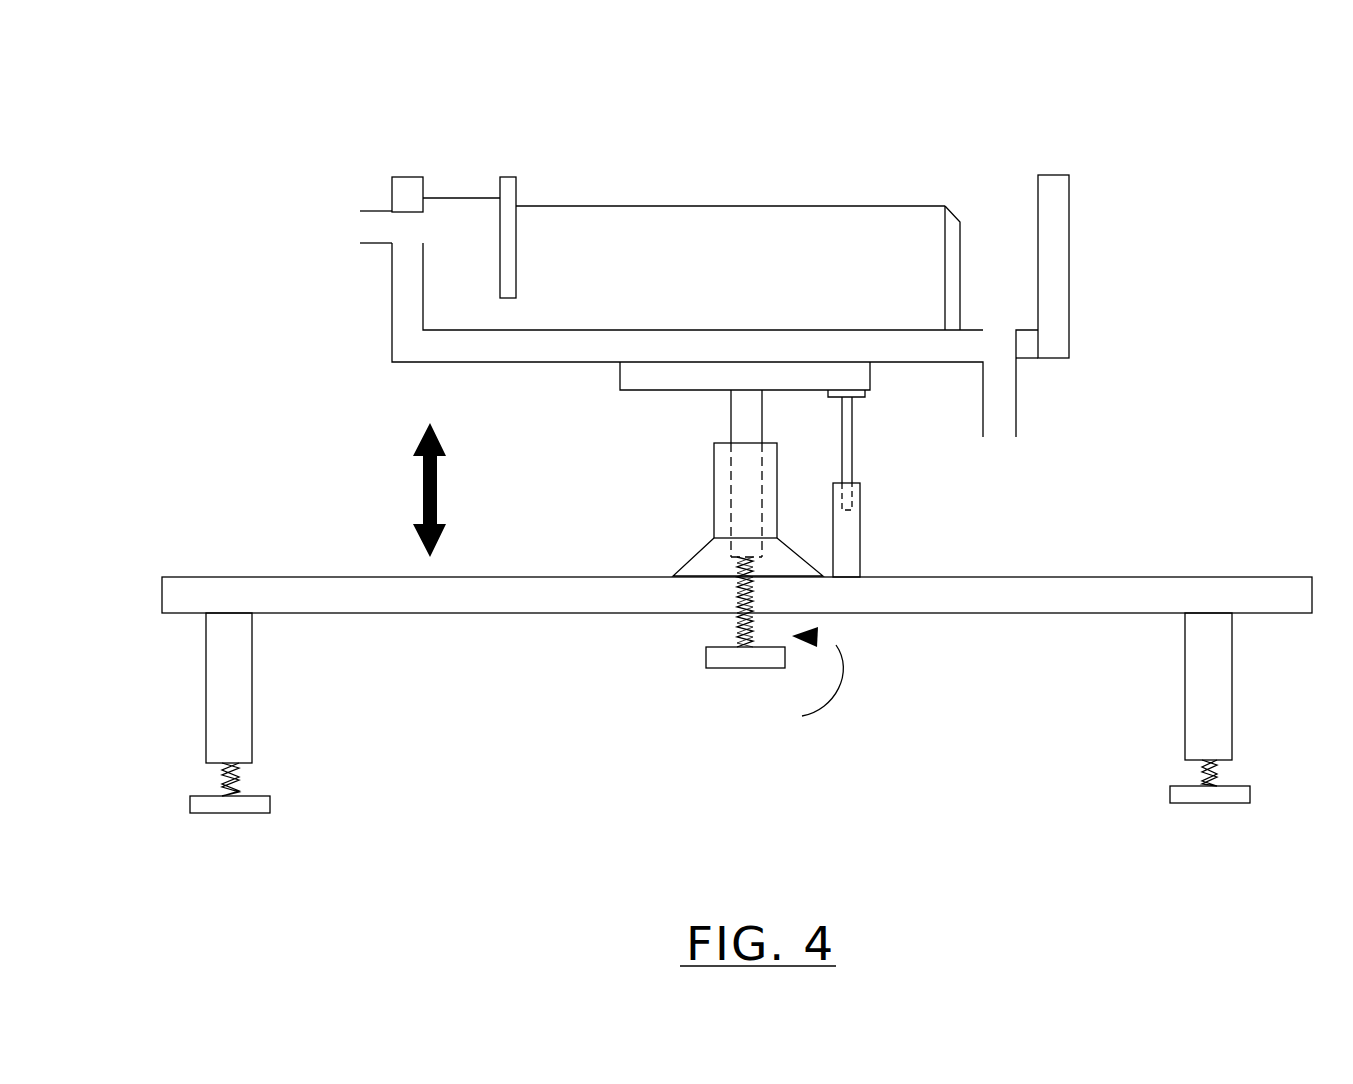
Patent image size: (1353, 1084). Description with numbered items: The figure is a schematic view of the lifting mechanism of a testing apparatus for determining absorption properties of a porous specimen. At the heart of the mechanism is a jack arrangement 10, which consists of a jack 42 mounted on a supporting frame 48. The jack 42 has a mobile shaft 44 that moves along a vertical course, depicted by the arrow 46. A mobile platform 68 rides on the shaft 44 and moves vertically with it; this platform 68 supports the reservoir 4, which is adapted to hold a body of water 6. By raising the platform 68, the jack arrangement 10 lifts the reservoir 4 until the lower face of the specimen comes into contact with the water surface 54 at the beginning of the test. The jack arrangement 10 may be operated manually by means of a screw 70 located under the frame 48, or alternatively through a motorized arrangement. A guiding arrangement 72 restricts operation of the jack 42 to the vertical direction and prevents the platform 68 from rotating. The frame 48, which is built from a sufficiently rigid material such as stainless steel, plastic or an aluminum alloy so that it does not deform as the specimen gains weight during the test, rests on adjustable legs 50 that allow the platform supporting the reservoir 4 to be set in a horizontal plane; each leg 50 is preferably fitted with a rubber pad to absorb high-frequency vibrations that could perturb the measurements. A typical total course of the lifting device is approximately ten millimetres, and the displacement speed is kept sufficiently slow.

The reservoir 4 is at (1118, 241).
The body of water 6 is at (590, 232).
The jack arrangement 10 is at (604, 472).
The jack 42 is at (720, 492).
The mobile shaft 44 is at (740, 405).
The arrow 46 is at (423, 481).
The supporting frame 48 is at (1158, 578).
The adjustable legs 50 is at (238, 700).
The water surface 54 is at (740, 205).
The mobile platform 68 is at (622, 382).
The screw 70 is at (727, 666).
The guiding arrangement 72 is at (850, 532).